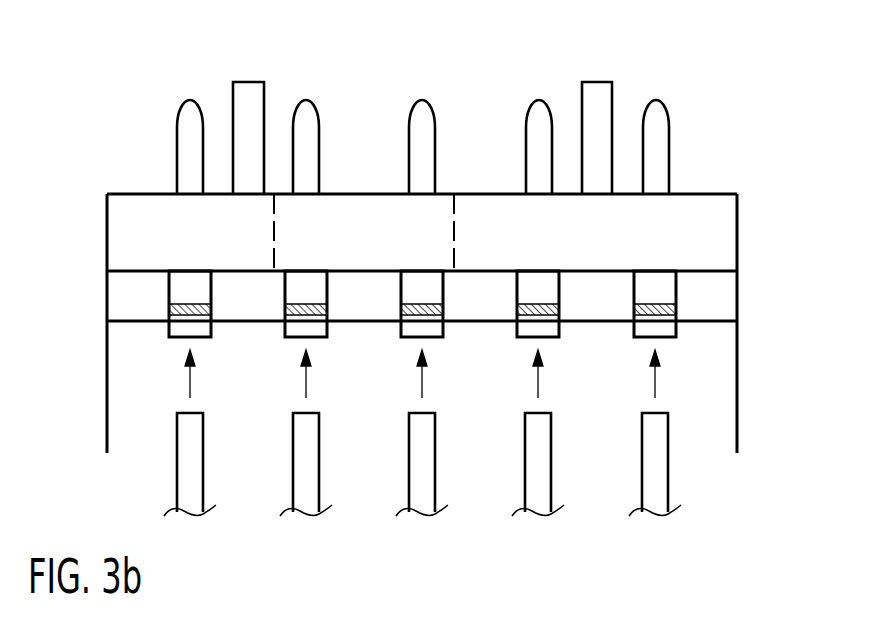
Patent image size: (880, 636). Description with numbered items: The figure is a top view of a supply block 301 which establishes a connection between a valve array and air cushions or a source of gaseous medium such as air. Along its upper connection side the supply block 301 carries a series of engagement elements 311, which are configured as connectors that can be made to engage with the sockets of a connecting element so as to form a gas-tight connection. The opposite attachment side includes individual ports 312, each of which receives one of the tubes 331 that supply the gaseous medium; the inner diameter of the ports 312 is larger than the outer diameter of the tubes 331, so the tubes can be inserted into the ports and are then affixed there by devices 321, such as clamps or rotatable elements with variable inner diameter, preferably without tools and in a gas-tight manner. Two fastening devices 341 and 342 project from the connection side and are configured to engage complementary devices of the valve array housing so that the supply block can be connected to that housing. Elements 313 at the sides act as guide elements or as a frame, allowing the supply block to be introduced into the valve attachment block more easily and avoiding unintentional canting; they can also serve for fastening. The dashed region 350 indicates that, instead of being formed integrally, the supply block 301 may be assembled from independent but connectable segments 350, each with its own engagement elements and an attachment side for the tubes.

The supply block 301 is at (762, 229).
The engagement elements 311 is at (669, 130).
The ports 312 is at (676, 333).
The elements 313 is at (737, 381).
The devices 321 is at (676, 307).
The tubes 331 is at (662, 492).
The fastening device 341 is at (612, 96).
The fastening device 342 is at (264, 96).
The segments 350 is at (360, 194).